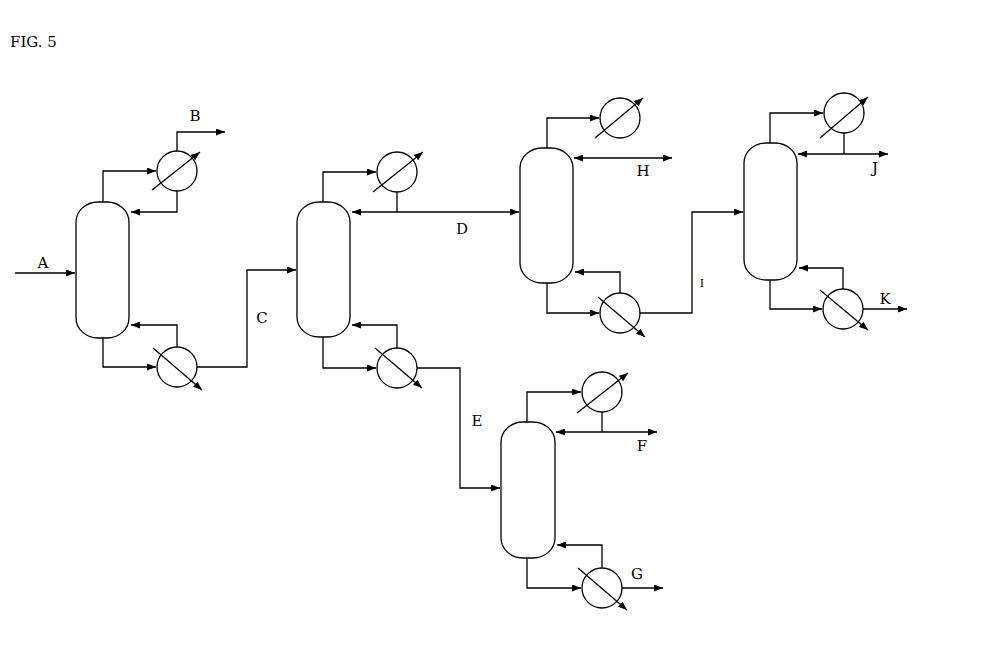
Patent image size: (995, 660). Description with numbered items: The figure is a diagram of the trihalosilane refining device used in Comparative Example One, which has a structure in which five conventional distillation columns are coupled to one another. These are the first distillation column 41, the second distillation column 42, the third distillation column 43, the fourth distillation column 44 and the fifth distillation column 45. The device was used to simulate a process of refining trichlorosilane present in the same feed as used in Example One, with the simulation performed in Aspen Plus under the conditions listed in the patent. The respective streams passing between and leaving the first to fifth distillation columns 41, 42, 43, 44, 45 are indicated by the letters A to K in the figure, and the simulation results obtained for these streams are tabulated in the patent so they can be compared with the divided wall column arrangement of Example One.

The first distillation column 41 is at (68, 200).
The second distillation column 42 is at (300, 203).
The third distillation column 43 is at (492, 547).
The fourth distillation column 44 is at (513, 150).
The fifth distillation column 45 is at (748, 133).